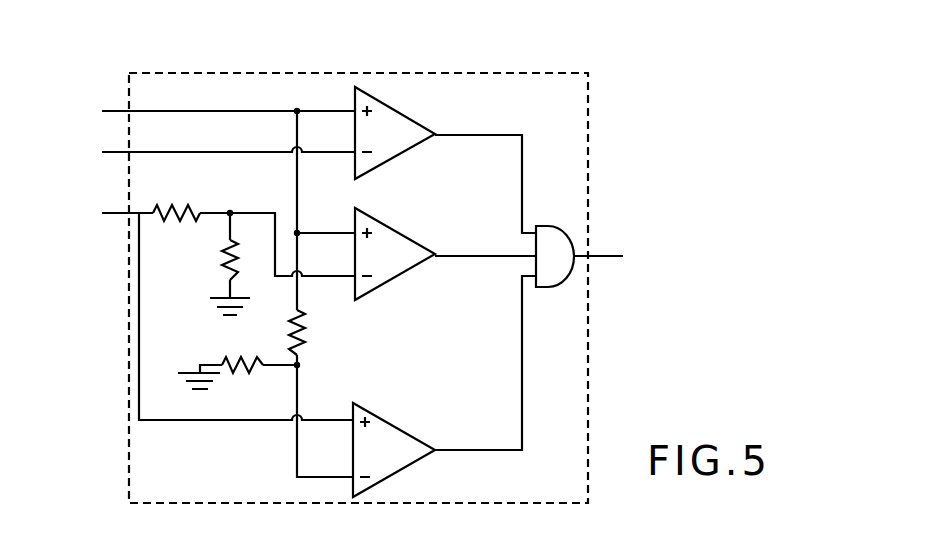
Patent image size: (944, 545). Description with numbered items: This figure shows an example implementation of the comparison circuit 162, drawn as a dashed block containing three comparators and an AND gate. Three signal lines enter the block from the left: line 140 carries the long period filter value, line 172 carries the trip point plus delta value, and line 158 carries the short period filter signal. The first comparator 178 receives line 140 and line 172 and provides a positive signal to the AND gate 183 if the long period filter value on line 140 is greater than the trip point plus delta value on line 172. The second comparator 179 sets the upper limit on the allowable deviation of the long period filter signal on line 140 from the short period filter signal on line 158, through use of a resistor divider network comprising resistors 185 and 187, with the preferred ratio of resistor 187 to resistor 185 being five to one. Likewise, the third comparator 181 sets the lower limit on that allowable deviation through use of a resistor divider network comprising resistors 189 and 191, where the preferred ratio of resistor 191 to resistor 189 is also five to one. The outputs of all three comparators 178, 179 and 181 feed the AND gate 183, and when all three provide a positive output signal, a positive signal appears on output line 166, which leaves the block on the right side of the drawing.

The line 140 is at (118, 110).
The line 172 is at (120, 153).
The line 158 is at (110, 215).
The comparison circuit 162 is at (128, 328).
The line 166 is at (592, 262).
The comparator 178 is at (390, 148).
The comparator 179 is at (407, 267).
The comparator 181 is at (393, 428).
The AND gate 183 is at (552, 275).
The resistor 185 is at (163, 203).
The resistor 187 is at (222, 250).
The resistor 189 is at (302, 325).
The resistor 191 is at (248, 362).